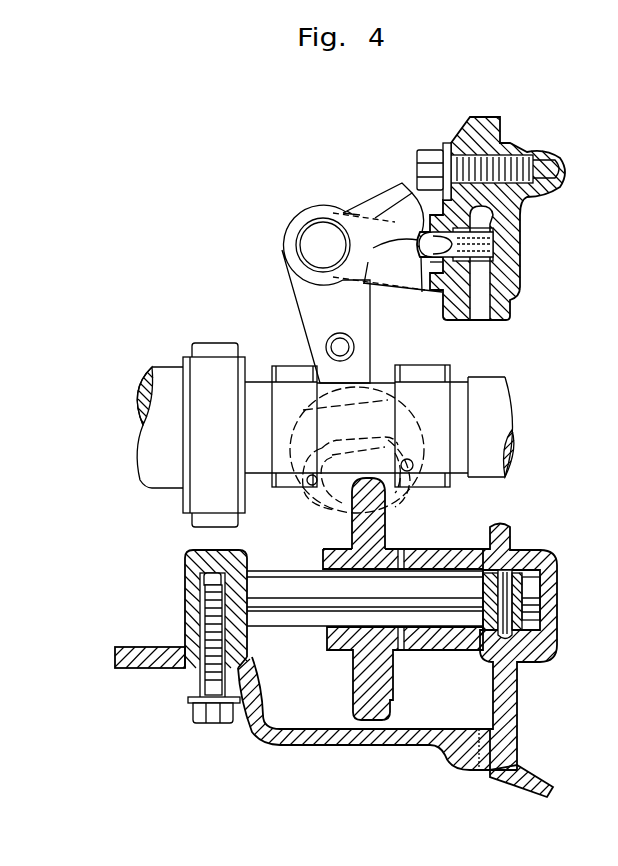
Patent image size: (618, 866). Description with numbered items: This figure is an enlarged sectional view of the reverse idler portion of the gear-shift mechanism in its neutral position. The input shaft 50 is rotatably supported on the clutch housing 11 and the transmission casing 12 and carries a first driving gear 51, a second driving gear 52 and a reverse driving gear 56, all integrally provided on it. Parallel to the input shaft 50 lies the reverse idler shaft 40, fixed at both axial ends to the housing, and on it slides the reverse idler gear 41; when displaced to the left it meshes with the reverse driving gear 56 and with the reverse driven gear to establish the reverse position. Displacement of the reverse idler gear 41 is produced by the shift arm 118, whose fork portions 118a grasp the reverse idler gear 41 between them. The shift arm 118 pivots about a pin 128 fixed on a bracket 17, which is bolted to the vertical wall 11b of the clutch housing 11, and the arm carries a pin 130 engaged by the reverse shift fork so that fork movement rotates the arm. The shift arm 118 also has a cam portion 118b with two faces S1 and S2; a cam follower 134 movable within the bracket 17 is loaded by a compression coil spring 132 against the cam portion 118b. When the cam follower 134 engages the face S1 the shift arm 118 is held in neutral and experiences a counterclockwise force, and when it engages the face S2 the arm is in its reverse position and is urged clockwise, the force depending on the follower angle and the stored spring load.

The clutch housing 11 is at (339, 637).
The vertical wall 11b is at (508, 301).
The transmission casing 12 is at (150, 668).
The bracket 17 is at (448, 143).
The reverse idler shaft 40 is at (429, 597).
The reverse idler gear 41 is at (387, 532).
The input shaft 50 is at (341, 414).
The first driving gear 51 is at (407, 365).
The second driving gear 52 is at (207, 343).
The reverse driving gear 56 is at (275, 487).
The shift arm 118 is at (333, 283).
The fork portions 118a is at (410, 492).
The cam portion 118b is at (394, 242).
The pin 128 is at (338, 254).
The pin 130 is at (326, 349).
The compression coil spring 132 is at (497, 239).
The cam follower 134 is at (424, 288).
The face S1 is at (386, 249).
The face S2 is at (368, 218).